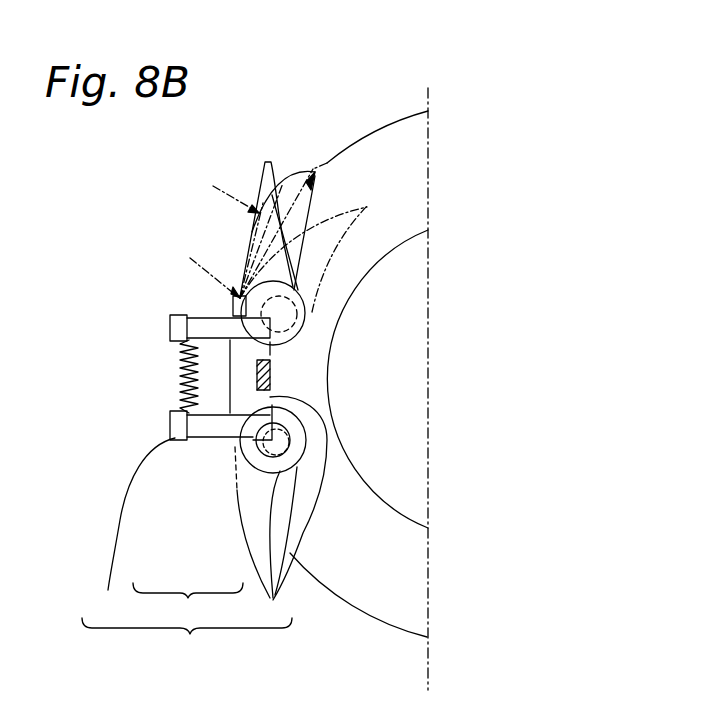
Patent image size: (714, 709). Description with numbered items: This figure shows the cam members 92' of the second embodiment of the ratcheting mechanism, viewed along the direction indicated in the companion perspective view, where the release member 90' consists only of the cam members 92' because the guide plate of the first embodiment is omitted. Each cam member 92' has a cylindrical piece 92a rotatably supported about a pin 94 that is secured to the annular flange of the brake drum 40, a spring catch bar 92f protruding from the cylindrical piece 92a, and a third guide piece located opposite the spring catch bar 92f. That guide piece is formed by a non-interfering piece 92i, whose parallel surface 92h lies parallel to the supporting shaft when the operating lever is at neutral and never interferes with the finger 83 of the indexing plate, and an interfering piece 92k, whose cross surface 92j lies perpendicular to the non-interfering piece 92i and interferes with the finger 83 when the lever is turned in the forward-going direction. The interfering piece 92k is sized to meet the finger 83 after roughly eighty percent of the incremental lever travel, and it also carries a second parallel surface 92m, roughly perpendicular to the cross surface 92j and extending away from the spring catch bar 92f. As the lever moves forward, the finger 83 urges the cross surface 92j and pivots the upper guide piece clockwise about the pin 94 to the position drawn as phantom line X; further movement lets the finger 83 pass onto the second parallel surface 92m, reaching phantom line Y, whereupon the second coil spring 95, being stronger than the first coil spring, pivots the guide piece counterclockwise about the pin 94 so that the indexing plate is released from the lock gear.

The brake drum 40 is at (377, 160).
The interfering piece 92k is at (287, 193).
The second parallel surface 92m is at (249, 236).
The release member 90' is at (177, 251).
The cross surface 92j is at (240, 327).
The pin 94 is at (292, 315).
The parallel surface 92h is at (275, 353).
The second coil spring 95 is at (177, 365).
The finger 83 is at (257, 377).
The non-interfering piece 92i is at (283, 473).
The spring catch bar 92f is at (133, 534).
The cylindrical piece 92a is at (281, 513).
The cam member 92' is at (187, 625).
The phantom line X is at (181, 256).
The phantom line Y is at (208, 185).